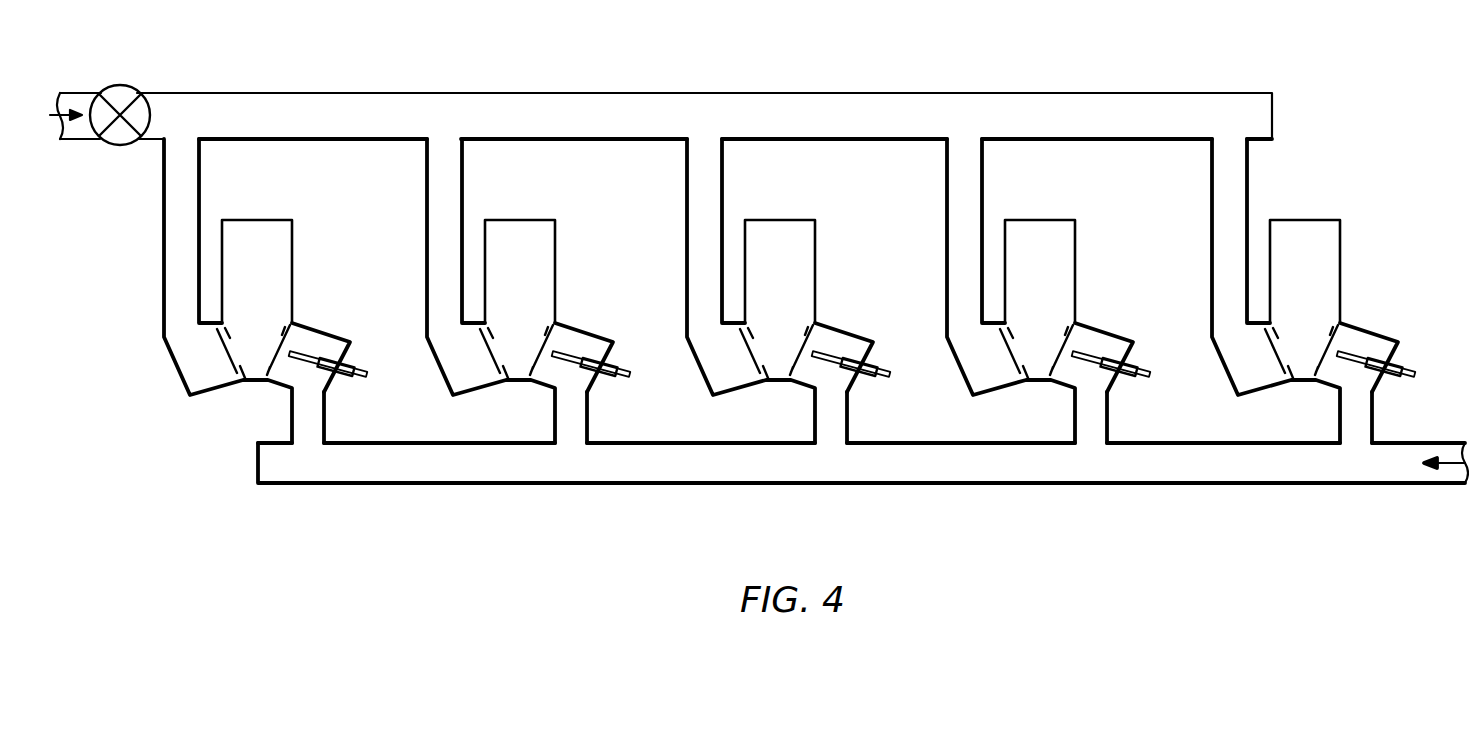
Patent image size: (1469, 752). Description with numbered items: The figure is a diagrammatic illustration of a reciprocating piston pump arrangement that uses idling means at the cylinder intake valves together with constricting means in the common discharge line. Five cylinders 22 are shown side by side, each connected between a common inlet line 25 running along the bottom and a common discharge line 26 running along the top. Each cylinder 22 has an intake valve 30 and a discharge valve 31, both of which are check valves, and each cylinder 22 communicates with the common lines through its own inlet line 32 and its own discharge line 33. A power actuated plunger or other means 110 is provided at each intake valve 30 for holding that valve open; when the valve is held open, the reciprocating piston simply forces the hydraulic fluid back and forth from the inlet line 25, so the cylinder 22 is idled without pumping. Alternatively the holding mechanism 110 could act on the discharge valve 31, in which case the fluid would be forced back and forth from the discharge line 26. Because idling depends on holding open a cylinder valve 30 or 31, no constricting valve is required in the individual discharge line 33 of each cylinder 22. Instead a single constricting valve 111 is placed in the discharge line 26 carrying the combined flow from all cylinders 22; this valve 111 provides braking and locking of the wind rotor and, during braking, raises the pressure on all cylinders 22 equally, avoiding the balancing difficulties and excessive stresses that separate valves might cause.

The cylinder 22 is at (818, 270).
The inlet line 25 is at (1313, 483).
The discharge line 26 is at (807, 92).
The intake valve 30 is at (840, 338).
The discharge valve 31 is at (769, 379).
The inlet line 32 is at (884, 417).
The discharge line 33 is at (752, 291).
The power actuated plunger 110 is at (879, 353).
The constricting valve 111 is at (124, 84).